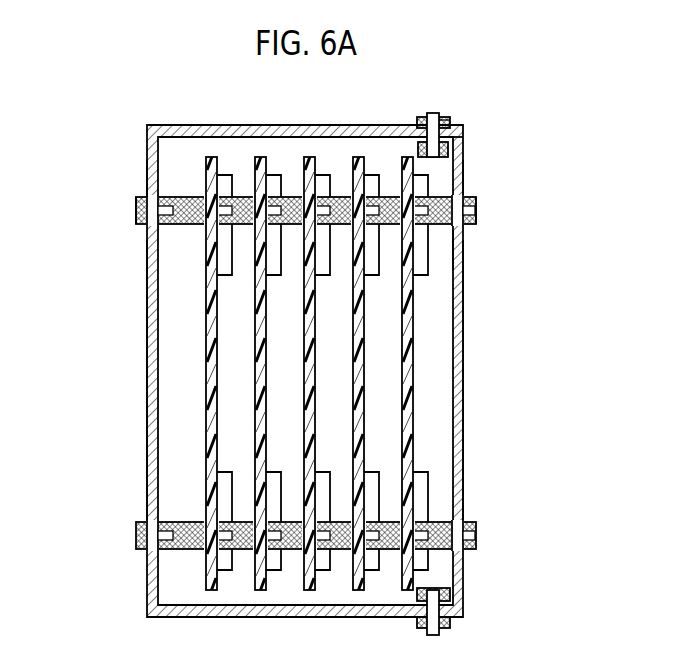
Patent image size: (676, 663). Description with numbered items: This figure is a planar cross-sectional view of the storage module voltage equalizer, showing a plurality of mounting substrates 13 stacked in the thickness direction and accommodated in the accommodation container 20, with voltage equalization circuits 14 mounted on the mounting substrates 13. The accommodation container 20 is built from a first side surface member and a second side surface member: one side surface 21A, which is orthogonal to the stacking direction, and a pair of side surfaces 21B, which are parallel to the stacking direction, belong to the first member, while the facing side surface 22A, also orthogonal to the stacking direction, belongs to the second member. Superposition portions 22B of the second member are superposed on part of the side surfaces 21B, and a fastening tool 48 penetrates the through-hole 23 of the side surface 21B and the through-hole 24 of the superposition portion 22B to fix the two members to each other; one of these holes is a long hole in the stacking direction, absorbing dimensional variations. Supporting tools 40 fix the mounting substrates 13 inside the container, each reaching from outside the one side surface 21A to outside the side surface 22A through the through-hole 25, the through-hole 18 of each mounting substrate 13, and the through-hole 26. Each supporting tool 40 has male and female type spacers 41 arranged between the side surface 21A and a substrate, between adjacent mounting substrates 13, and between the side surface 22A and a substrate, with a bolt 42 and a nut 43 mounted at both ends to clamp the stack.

The accommodation container 20 is at (148, 103).
The mounting substrate 13 is at (357, 158).
The voltage equalization circuit 14 is at (462, 250).
The through-hole 18 is at (264, 160).
The one side surface 21A is at (147, 378).
The side surface 21B is at (340, 127).
The facing side surface 22A is at (466, 320).
The superposition portion 22B is at (395, 616).
The through-hole 23 is at (453, 124).
The through-hole 24 is at (455, 138).
The through-hole 25 is at (148, 197).
The through-hole 26 is at (462, 190).
The supporting tool 40 is at (130, 212).
The male and female type spacer 41 is at (172, 205).
The bolt 42 is at (140, 200).
The nut 43 is at (476, 204).
The fastening tool 48 is at (447, 120).